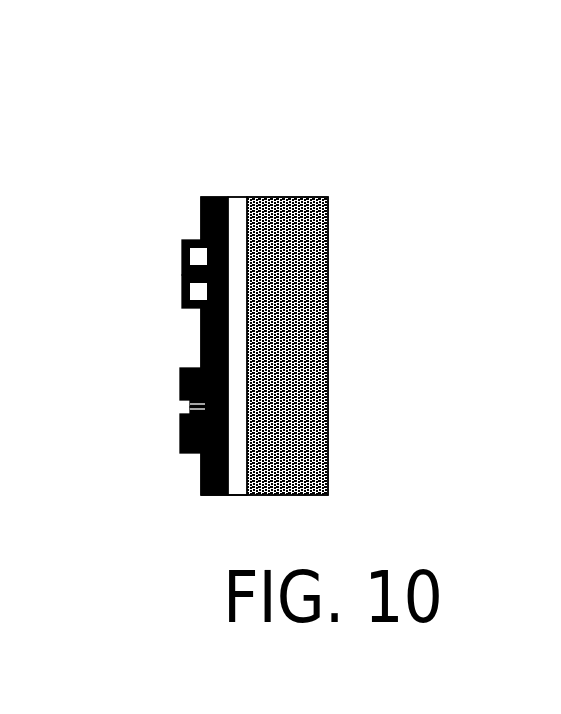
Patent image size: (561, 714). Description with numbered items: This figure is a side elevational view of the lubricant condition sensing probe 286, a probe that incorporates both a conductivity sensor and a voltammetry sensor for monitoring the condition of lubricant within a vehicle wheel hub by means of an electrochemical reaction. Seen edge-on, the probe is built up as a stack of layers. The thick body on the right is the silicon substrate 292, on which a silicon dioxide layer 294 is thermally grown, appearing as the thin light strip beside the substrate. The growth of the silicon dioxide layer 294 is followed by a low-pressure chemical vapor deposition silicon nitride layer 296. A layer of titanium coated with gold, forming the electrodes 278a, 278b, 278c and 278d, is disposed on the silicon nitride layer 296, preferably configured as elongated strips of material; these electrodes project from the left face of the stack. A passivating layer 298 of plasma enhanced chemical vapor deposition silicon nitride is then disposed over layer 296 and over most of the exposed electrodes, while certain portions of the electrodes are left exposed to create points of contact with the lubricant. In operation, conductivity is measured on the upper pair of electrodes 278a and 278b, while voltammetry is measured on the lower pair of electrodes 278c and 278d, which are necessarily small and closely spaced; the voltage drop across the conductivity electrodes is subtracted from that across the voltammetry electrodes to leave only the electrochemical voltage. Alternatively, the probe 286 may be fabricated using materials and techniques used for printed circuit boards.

The sensing probe 286 is at (352, 382).
The silicon substrate 292 is at (308, 197).
The silicon dioxide layer 294 is at (235, 205).
The passivating layer 298 is at (200, 205).
The silicon nitride layer 296 is at (213, 497).
The electrode 278a is at (183, 240).
The electrode 278b is at (183, 297).
The electrode 278c is at (180, 385).
The electrode 278d is at (180, 425).